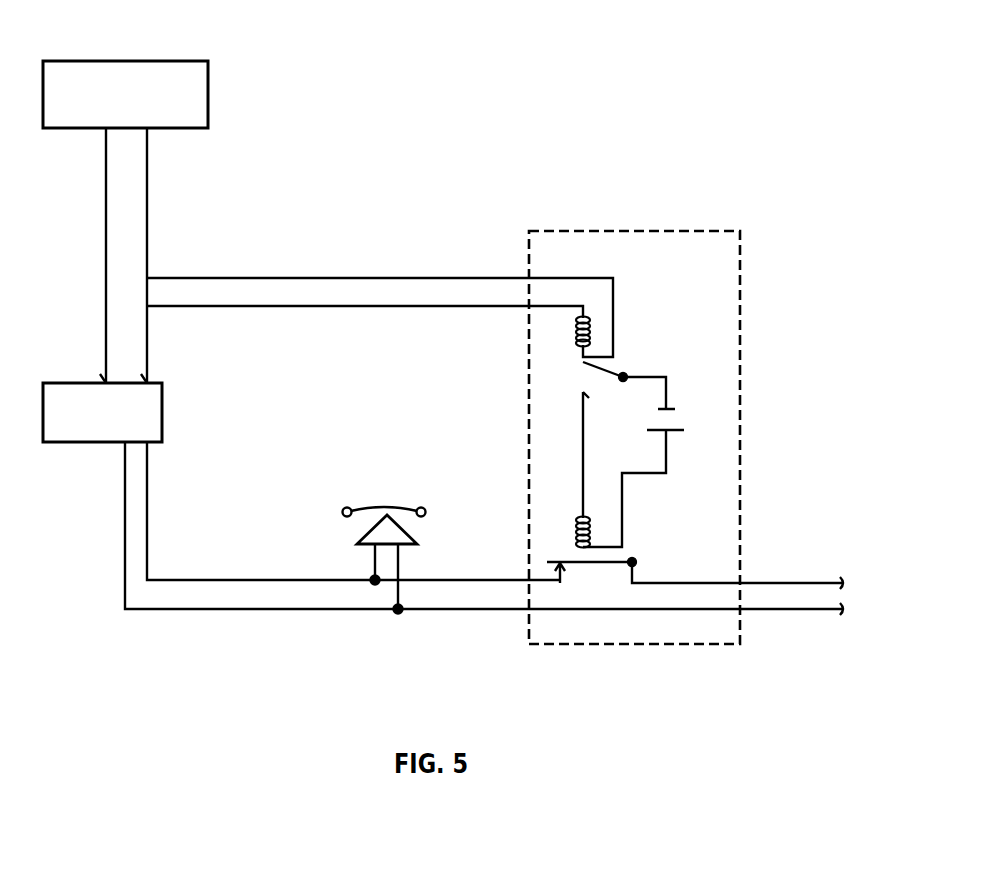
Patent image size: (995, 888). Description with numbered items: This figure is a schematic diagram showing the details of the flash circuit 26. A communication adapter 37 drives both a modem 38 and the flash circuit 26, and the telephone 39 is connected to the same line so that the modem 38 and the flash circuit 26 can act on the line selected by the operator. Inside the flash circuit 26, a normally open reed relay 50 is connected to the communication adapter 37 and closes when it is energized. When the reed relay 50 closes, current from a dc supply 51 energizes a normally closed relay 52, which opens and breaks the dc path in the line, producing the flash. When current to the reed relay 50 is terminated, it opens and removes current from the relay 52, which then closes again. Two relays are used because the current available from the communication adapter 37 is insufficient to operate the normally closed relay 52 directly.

The communication adapter 37 is at (185, 62).
The modem 38 is at (162, 396).
The flash circuit 26 is at (645, 229).
The telephone 39 is at (412, 534).
The reed relay 50 is at (627, 373).
The dc supply 51 is at (683, 432).
The normally closed relay 52 is at (622, 555).